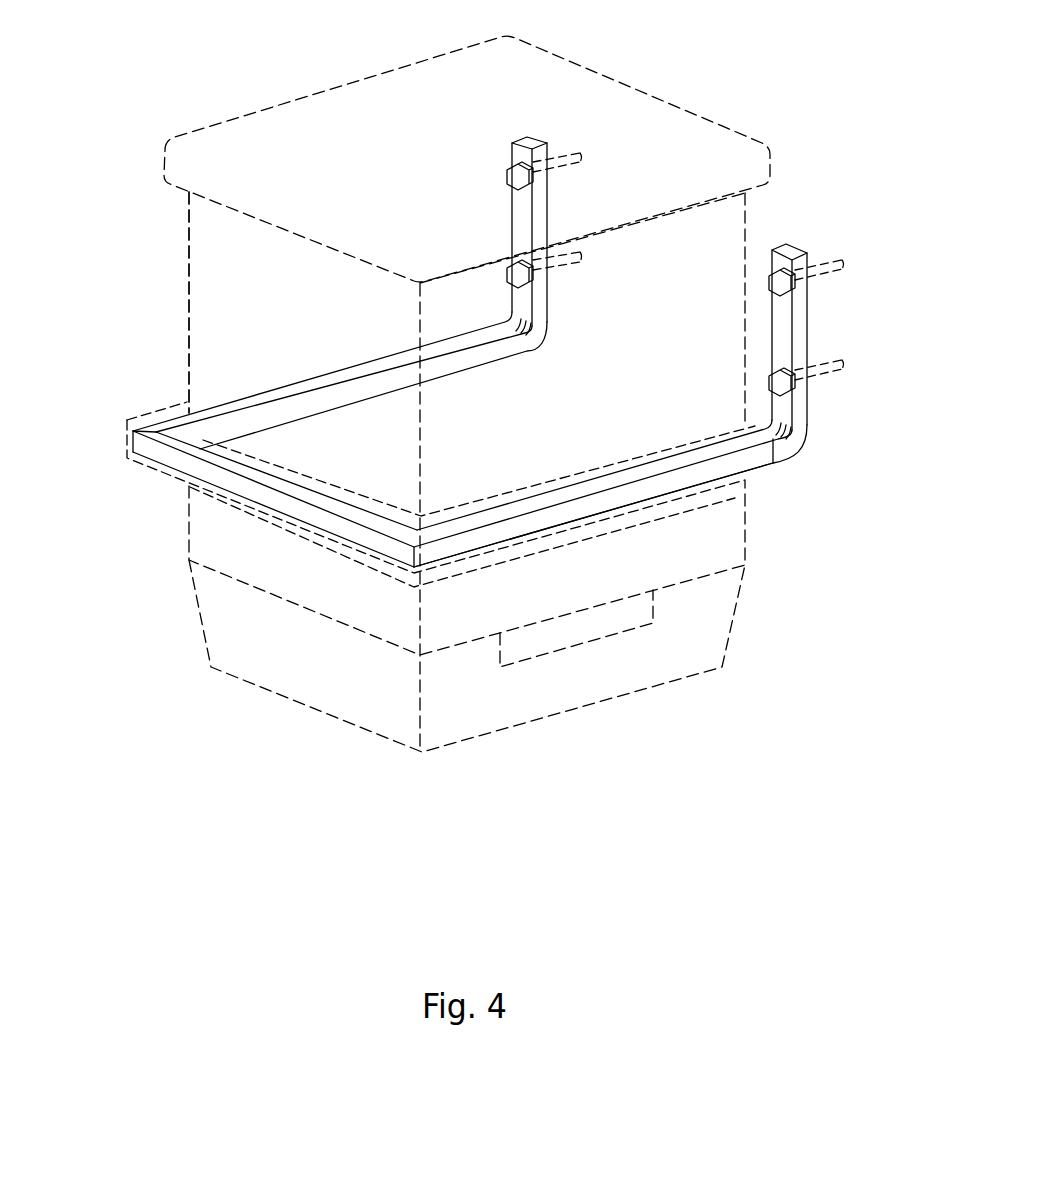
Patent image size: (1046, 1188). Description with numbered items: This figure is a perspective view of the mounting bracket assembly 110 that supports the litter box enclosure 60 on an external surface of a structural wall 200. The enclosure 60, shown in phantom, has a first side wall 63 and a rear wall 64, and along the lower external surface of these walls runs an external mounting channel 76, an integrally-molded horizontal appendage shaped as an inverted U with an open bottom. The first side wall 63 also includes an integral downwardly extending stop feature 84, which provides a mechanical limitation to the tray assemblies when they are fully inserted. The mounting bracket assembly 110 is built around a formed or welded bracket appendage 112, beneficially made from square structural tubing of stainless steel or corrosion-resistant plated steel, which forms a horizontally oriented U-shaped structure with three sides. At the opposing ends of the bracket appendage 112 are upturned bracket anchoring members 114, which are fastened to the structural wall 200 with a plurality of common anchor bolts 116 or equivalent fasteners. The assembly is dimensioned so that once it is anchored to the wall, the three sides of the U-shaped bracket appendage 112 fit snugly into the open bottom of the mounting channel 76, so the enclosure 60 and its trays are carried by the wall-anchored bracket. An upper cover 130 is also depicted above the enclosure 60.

The enclosure 60 is at (127, 228).
The first side wall 63 is at (702, 222).
The rear wall 64 is at (213, 285).
The mounting channel 76 is at (160, 467).
The stop feature 84 is at (570, 648).
The mounting bracket assembly 110 is at (821, 201).
The bracket appendage 112 is at (240, 407).
The bracket anchoring members 114 is at (528, 142).
The anchor bolts 116 is at (511, 270).
The housing lid 130 is at (588, 78).
The structural wall 200 is at (822, 524).